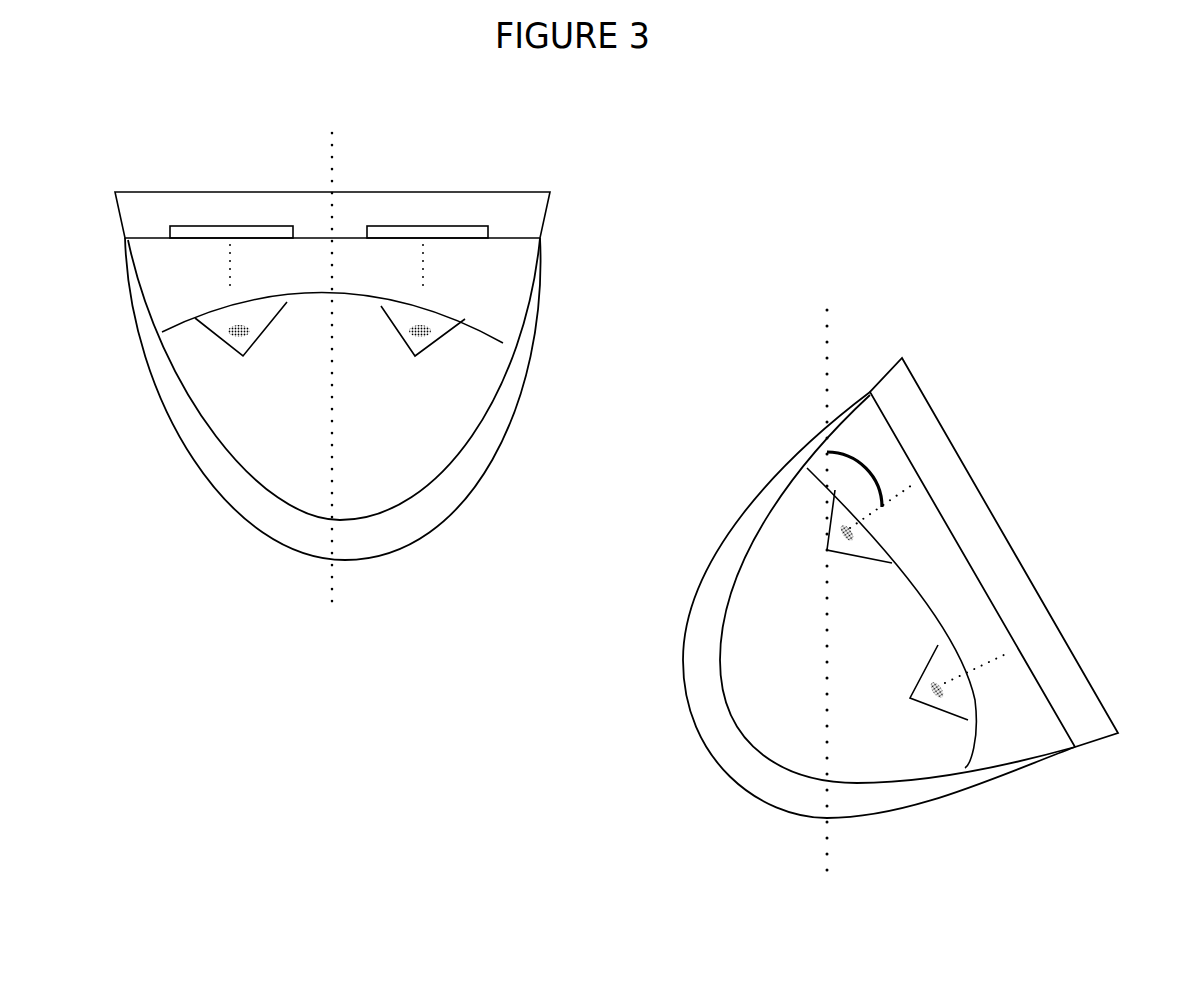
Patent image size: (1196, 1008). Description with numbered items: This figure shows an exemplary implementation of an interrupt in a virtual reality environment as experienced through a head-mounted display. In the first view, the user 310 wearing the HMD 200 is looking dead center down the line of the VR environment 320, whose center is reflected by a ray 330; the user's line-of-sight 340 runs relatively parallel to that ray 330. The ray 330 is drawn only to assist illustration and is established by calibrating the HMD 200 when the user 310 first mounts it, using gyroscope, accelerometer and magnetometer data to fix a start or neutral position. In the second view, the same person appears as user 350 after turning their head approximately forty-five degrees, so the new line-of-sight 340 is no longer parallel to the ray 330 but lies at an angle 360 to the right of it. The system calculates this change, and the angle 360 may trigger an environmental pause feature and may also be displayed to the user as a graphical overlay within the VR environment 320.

The HMD 200 is at (183, 186).
The user 310 is at (334, 379).
The VR environment 320 is at (644, 471).
The ray 330 is at (583, 488).
The line-of-sight 340 is at (436, 279).
The user 350 is at (881, 618).
The angle 360 is at (884, 458).